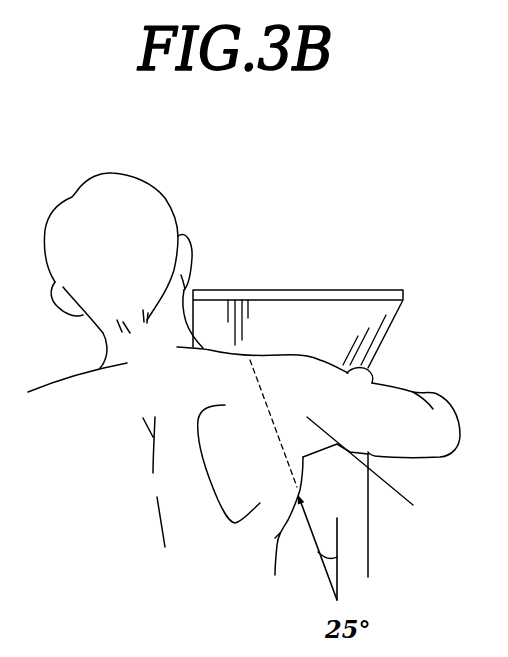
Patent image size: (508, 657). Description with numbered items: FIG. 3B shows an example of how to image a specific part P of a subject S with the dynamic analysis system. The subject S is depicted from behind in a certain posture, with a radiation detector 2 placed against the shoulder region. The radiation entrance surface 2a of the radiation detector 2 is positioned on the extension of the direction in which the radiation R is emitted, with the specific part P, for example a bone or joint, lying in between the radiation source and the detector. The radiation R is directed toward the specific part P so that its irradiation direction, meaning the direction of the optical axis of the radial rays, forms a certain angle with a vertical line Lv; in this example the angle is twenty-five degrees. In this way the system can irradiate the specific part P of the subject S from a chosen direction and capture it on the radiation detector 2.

The subject S is at (145, 192).
The radiation detector 2 is at (288, 284).
The radiation entrance surface 2a is at (378, 333).
The specific part P is at (374, 472).
The radiation R is at (318, 552).
The vertical line Lv is at (337, 543).